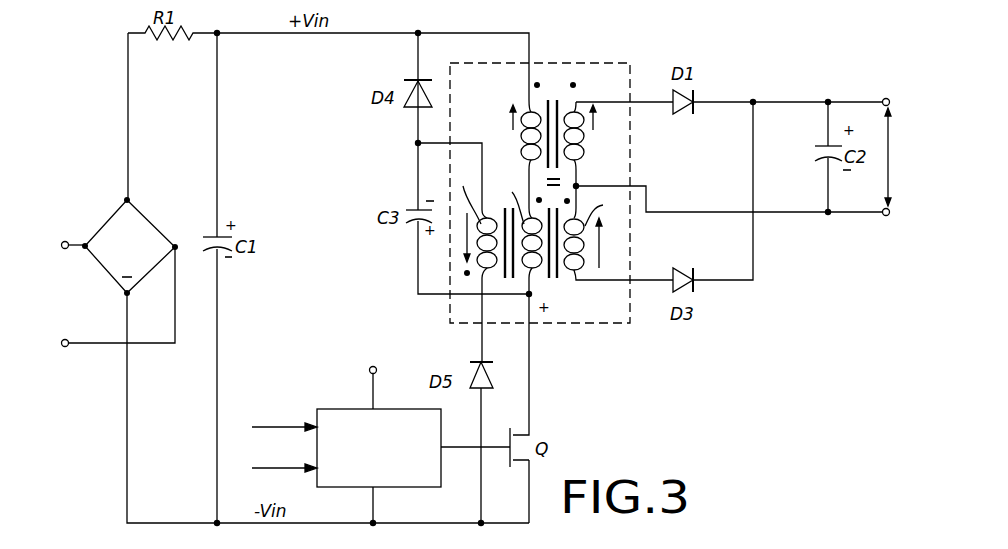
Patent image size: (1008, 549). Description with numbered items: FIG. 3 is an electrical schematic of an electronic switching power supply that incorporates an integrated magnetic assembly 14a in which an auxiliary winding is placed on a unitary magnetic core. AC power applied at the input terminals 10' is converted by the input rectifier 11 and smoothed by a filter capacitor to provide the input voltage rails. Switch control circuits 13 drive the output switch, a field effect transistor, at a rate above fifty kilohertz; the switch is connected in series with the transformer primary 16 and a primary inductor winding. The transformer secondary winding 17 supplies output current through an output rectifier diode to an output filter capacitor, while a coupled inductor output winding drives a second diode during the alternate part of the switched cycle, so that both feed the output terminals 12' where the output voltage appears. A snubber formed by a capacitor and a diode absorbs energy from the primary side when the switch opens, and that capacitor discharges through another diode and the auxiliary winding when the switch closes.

The AC input source terminals 10' is at (115, 294).
The input rectifier 11 is at (150, 222).
The output load terminals 12' is at (918, 157).
The switch control circuits 13 is at (337, 409).
The integrated magnetic assembly 14a is at (620, 222).
The transformer primary 16 is at (523, 114).
The transformer secondary winding 17 is at (580, 154).